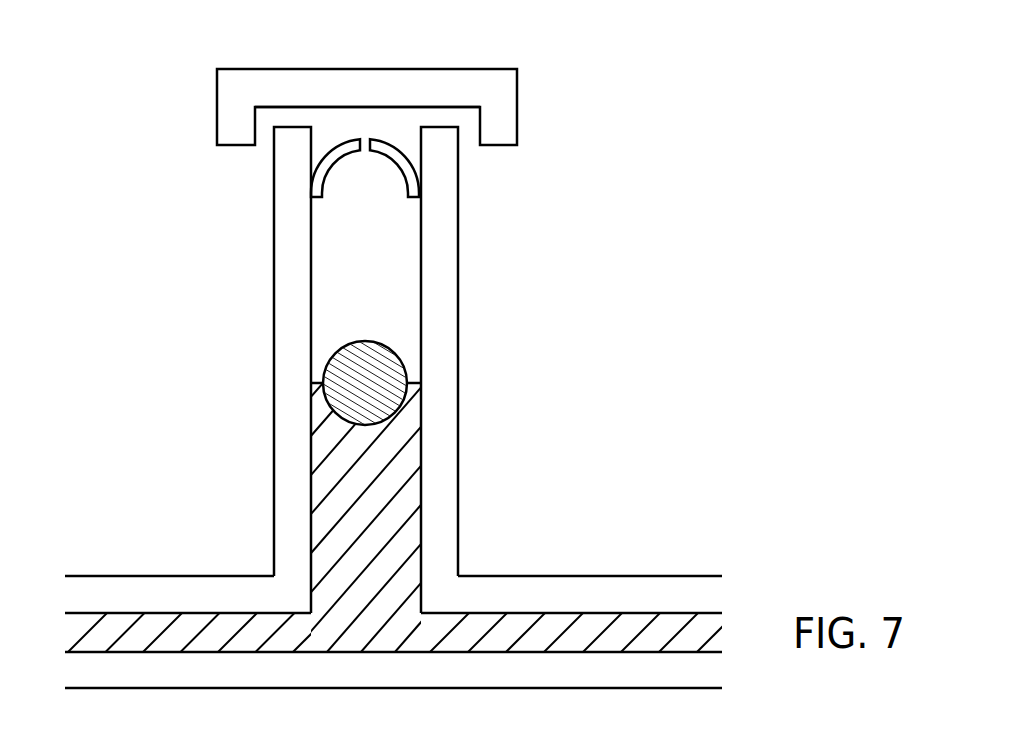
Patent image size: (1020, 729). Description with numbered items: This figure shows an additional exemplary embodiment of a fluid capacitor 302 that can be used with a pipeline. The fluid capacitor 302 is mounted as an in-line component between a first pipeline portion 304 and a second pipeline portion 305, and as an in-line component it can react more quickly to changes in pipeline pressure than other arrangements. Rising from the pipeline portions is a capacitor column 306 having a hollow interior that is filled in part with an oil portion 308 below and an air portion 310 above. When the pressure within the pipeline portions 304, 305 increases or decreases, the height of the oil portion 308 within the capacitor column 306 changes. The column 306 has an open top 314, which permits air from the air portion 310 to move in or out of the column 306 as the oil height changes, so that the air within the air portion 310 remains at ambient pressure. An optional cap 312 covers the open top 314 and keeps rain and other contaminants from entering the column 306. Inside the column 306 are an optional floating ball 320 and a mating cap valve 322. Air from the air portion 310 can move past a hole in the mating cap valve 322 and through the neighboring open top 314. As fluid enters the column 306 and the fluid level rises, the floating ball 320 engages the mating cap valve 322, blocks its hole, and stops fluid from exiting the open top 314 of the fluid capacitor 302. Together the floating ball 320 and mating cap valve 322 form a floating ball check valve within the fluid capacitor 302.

The fluid capacitor 302 is at (155, 392).
The first pipeline portion 304 is at (105, 595).
The second pipeline portion 305 is at (635, 597).
The capacitor column 306 is at (273, 310).
The oil portion 308 is at (385, 490).
The air portion 310 is at (385, 295).
The cap 312 is at (230, 95).
The open top 314 is at (402, 127).
The floating ball 320 is at (393, 370).
The mating cap valve 322 is at (402, 163).